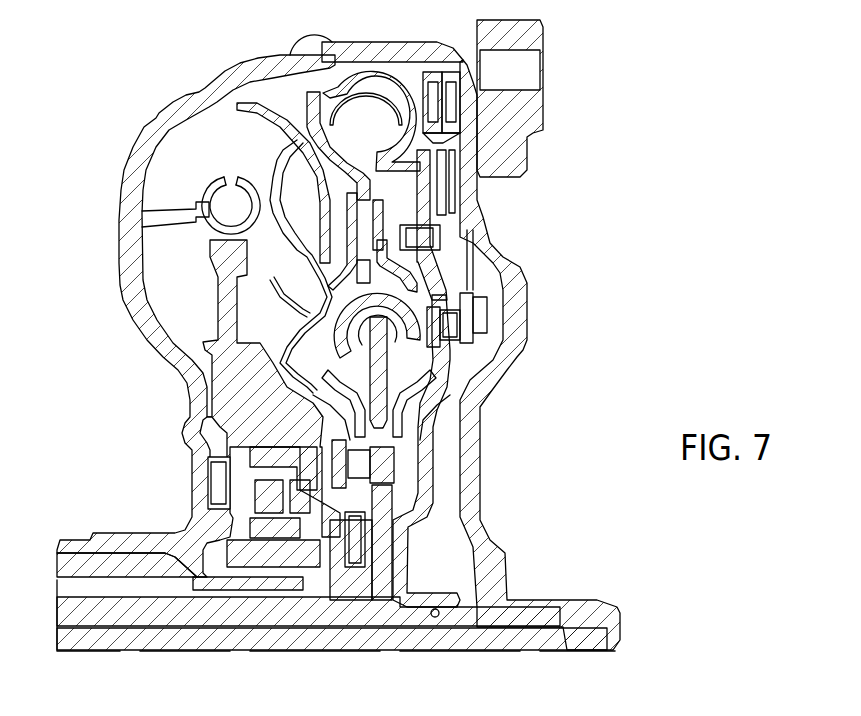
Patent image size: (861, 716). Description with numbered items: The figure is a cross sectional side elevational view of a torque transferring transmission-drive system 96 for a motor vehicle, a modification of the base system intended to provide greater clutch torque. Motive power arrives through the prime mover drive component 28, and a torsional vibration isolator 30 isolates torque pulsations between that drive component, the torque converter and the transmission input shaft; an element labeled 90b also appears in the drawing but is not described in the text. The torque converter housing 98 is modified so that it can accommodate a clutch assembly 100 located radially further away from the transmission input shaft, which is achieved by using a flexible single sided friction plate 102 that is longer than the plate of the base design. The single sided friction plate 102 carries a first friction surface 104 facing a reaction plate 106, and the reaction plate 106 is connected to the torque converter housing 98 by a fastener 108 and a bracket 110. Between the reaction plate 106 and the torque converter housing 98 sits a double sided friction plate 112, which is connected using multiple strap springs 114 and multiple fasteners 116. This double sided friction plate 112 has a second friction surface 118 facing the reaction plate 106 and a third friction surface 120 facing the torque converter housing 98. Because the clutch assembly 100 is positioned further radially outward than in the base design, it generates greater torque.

The prime mover drive component 28 is at (593, 603).
The torsional vibration isolator 30 is at (367, 50).
The gear 90b is at (663, 8).
The transmission-drive system 96 is at (667, 137).
The torque converter housing 98 is at (463, 490).
The clutch assembly 100 is at (557, 160).
The single sided friction plate 102 is at (417, 510).
The first friction surface 104 is at (420, 168).
The reaction plate 106 is at (433, 143).
The fastener 108 is at (430, 75).
The bracket 110 is at (443, 75).
The double sided friction plate 112 is at (473, 273).
The strap springs 114 is at (460, 302).
The fasteners 116 is at (457, 337).
The second friction surface 118 is at (440, 182).
The third friction surface 120 is at (450, 202).